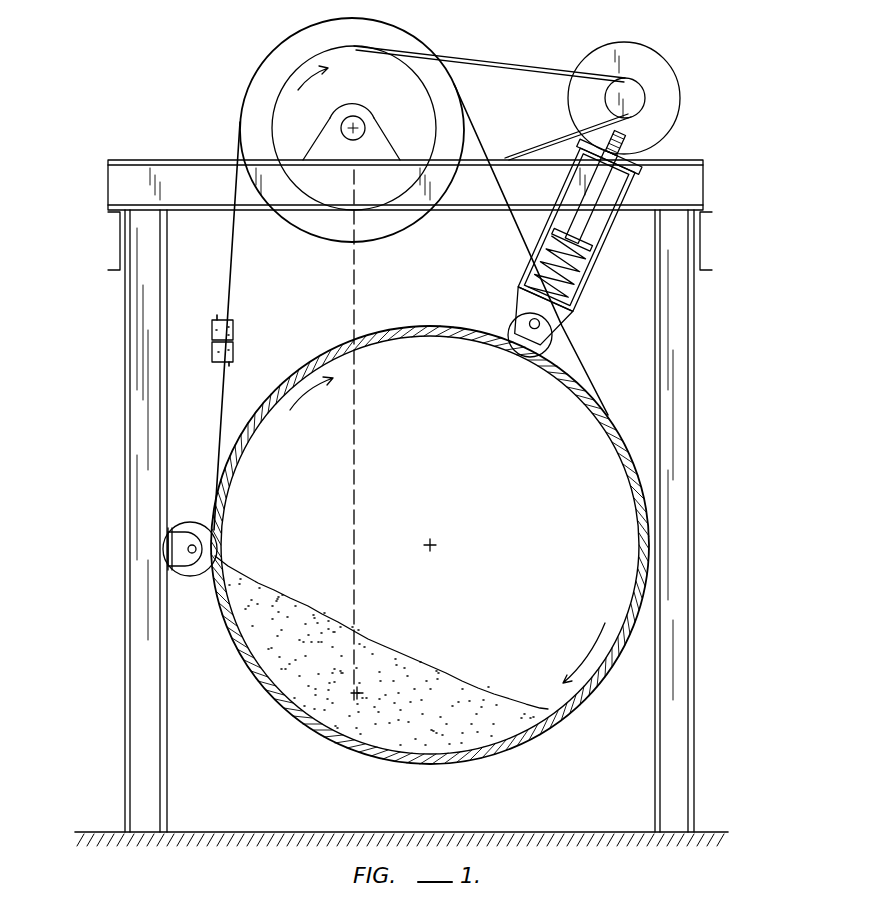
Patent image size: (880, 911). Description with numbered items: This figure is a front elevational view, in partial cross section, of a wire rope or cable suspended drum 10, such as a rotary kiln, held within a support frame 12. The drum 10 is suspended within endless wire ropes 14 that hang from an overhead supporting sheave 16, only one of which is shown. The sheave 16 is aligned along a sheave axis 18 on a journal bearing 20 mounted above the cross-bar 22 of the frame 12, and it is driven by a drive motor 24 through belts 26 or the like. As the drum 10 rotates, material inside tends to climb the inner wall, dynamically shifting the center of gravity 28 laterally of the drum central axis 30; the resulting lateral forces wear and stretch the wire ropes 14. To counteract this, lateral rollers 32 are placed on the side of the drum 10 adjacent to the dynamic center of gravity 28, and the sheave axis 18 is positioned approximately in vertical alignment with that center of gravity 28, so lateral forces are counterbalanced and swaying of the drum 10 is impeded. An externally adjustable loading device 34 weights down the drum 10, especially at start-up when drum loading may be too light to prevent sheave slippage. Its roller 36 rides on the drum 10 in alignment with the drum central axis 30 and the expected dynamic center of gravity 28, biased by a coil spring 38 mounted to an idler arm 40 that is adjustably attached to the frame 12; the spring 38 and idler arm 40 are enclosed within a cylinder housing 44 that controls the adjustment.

The drum 10 is at (323, 356).
The support frame 12 is at (125, 342).
The endless wire ropes 14 is at (229, 285).
The overhead supporting sheave 16 is at (305, 28).
The sheave axis 18 is at (366, 127).
The journal bearing 20 is at (330, 125).
The cross-bar 22 is at (150, 160).
The drive motor 24 is at (641, 43).
The belts 26 is at (510, 60).
The dynamic center of gravity 28 is at (357, 697).
The drum central axis 30 is at (437, 548).
The lateral rollers 32 is at (205, 525).
The externally adjustable loading device 34 is at (590, 292).
The roller 36 is at (512, 325).
The coil spring 38 is at (590, 268).
The idler arm 40 is at (593, 233).
The cylinder housing 44 is at (640, 188).